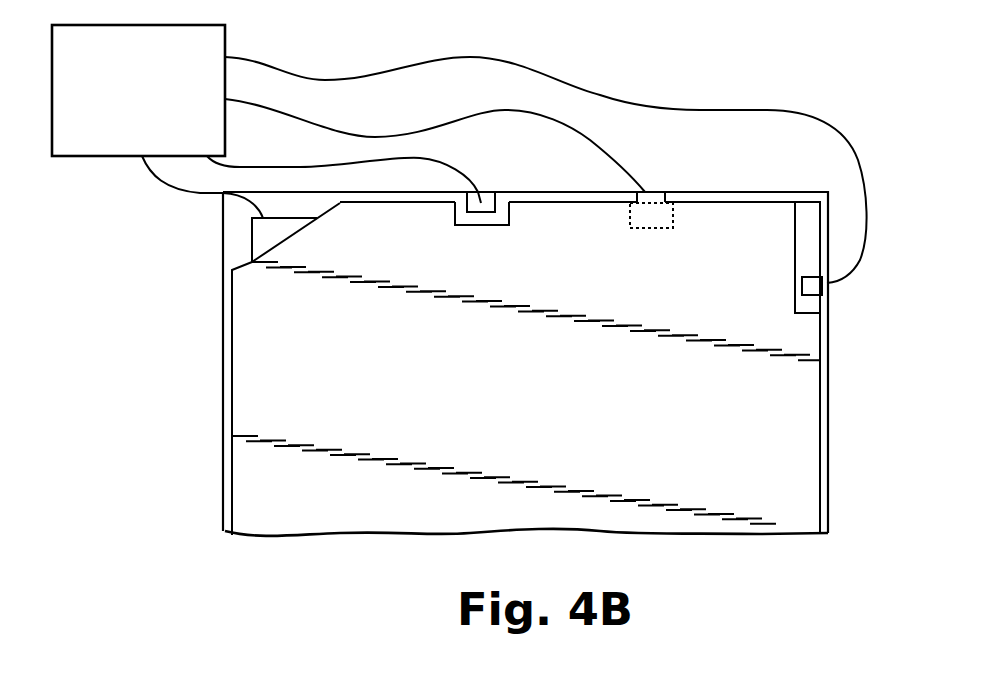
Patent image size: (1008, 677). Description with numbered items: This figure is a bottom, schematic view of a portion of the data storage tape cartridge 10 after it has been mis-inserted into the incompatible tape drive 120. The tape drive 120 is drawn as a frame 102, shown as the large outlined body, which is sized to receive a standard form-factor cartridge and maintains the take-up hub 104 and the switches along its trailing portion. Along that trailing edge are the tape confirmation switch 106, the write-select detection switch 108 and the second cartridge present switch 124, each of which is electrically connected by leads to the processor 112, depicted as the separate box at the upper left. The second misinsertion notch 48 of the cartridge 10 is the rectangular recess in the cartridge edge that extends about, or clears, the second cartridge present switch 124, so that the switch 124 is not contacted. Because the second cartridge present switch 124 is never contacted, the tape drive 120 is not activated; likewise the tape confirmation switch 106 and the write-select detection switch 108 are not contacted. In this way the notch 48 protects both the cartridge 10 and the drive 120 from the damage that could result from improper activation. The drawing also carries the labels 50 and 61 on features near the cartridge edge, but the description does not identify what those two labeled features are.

The data storage tape cartridge 10 is at (773, 427).
The second misinsertion notch 48 is at (480, 224).
The side electrode strip 50 is at (795, 304).
The sensor region 61 is at (657, 228).
The frame 102 is at (224, 365).
The take-up hub 104 is at (258, 237).
The tape confirmation switch 106 is at (817, 287).
The write-select detection switch 108 is at (652, 195).
The processor 112 is at (105, 140).
The tape drive 120 is at (767, 93).
The second cartridge present switch 124 is at (479, 193).